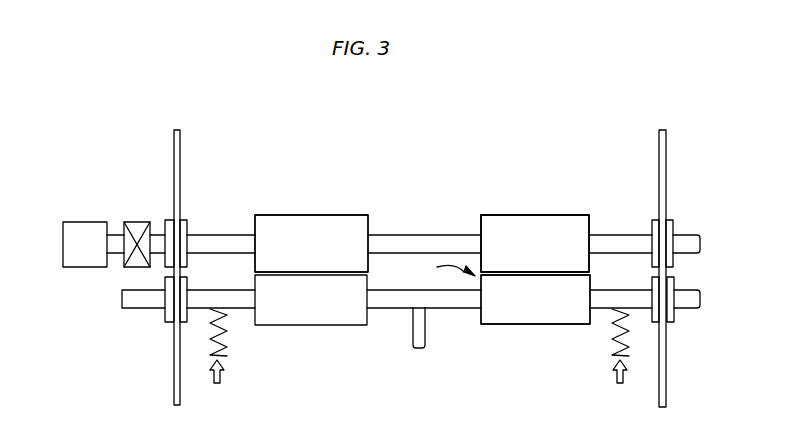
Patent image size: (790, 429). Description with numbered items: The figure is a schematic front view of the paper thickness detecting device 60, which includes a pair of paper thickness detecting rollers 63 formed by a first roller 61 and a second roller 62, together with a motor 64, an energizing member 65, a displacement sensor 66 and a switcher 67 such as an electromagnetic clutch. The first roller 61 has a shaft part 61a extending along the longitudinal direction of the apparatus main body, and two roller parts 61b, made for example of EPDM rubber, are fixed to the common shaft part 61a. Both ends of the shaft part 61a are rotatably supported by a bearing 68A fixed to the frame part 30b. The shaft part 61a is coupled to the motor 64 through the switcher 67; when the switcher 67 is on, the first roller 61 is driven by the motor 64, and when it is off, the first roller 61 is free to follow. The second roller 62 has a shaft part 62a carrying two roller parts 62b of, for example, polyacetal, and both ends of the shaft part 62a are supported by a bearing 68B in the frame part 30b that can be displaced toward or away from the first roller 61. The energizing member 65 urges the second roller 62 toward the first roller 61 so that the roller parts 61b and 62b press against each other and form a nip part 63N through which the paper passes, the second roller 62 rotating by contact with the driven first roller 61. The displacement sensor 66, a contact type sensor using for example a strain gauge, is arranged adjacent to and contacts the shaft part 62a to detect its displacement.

The paper thickness detecting device 60 is at (440, 126).
The frame part 30b is at (182, 150).
The motor 64 is at (85, 222).
The switcher 67 is at (138, 222).
The bearing 68A is at (188, 222).
The bearing 68B is at (188, 285).
The roller part 61b is at (322, 222).
The roller part 62b is at (319, 325).
The first roller 61 is at (570, 220).
The second roller 62 is at (598, 265).
The pair of paper thickness detecting rollers 63 is at (622, 175).
The nip part 63N is at (434, 270).
The shaft part 61a is at (697, 235).
The shaft part 62a is at (692, 310).
The energizing member 65 is at (228, 340).
The displacement sensor 66 is at (419, 350).